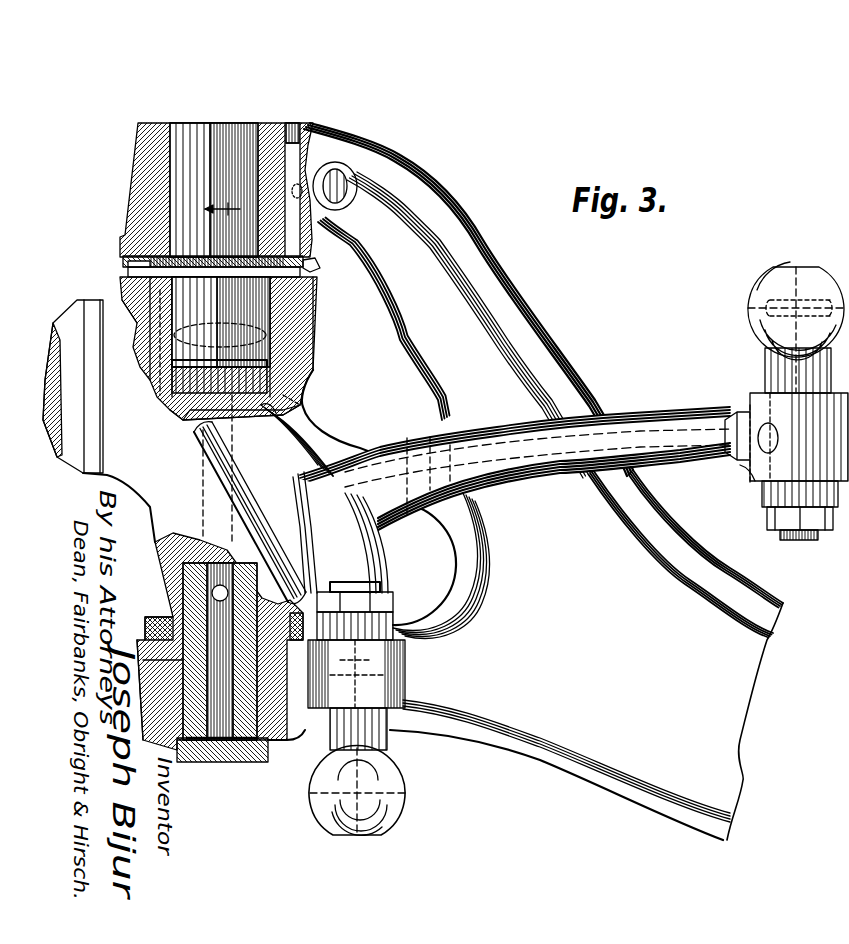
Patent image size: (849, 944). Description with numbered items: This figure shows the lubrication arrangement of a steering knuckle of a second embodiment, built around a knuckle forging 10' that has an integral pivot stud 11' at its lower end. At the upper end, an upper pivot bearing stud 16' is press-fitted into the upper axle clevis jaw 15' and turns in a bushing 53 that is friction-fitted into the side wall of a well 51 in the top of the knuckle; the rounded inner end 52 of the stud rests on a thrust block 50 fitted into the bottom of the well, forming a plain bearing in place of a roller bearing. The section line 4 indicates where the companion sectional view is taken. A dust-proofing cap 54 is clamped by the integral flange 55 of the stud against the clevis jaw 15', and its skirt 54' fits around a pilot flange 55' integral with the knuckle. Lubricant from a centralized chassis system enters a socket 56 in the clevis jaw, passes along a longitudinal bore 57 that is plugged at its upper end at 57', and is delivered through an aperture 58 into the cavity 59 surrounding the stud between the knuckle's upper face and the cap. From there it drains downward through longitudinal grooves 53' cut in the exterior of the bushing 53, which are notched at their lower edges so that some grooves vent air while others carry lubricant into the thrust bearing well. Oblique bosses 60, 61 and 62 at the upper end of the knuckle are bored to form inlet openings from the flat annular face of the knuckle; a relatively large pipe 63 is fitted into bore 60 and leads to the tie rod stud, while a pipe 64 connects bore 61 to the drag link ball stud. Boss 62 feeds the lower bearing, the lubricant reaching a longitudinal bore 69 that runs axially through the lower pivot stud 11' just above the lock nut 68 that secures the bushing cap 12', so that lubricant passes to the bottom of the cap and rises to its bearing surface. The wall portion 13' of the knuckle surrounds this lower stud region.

The upper axle clevis jaw 15' is at (202, 190).
The upper pivot bearing stud 16' is at (214, 190).
The section line 4 is at (217, 419).
The dust-proofing cap 54 is at (195, 245).
The cavity 59 is at (132, 263).
The pilot flange 55' is at (191, 273).
The bushing 53 is at (187, 348).
The longitudinal grooves 53' is at (310, 337).
The integral flange 55 is at (238, 337).
The oblique boss 61 is at (310, 355).
The oblique boss 60 is at (167, 340).
The well 51 is at (200, 367).
The rounded inner end 52 is at (193, 380).
The thrust block 50 is at (190, 417).
The oblique boss 62 is at (237, 420).
The pipe 64 is at (292, 440).
The pipe 63 is at (250, 500).
The knuckle forging 10' is at (212, 625).
The lock nut 68 is at (163, 627).
The housing wall 13' is at (146, 687).
The pivot stud 11' is at (183, 651).
The bushing cap 12' is at (239, 752).
The longitudinal bore 69 is at (228, 740).
The plug 57' is at (316, 126).
The bore 57 is at (343, 185).
The socket 56 is at (355, 172).
The skirt 54' is at (348, 248).
The aperture 58 is at (345, 262).